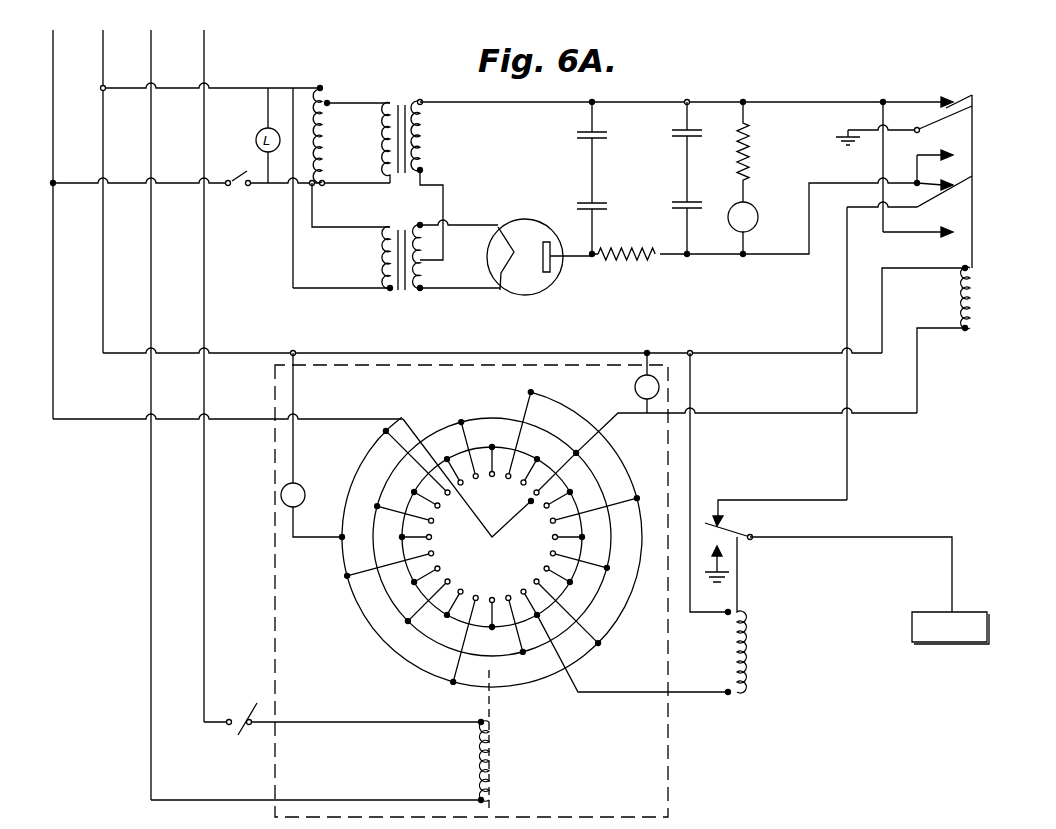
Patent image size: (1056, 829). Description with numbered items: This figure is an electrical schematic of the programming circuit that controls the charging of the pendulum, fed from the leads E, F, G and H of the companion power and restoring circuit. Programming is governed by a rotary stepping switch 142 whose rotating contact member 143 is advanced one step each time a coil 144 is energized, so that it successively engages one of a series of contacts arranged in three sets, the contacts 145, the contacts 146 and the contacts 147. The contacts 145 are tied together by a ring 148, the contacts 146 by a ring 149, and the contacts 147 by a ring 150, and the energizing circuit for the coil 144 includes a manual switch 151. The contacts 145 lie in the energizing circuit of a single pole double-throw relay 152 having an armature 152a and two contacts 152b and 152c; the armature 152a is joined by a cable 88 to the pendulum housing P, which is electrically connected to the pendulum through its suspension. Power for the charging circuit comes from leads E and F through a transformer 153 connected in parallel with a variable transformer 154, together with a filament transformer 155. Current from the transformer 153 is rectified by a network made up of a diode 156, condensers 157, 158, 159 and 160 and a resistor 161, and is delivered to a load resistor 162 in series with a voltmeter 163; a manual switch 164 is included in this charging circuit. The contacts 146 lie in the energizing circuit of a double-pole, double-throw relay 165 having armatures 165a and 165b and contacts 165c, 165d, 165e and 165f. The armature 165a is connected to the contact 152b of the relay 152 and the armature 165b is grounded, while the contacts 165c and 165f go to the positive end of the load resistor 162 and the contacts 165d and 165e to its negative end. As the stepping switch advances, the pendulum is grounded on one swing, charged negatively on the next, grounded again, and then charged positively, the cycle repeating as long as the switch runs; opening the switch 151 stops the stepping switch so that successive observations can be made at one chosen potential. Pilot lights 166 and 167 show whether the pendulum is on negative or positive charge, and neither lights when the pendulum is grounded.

The cable 88 is at (905, 537).
The rotary stepping switch 142 is at (668, 763).
The rotating contact member 143 is at (520, 513).
The coil 144 is at (498, 772).
The contacts 145 is at (500, 578).
The contacts 146 is at (432, 538).
The contacts 147 is at (533, 563).
The ring 148 is at (600, 490).
The ring 149 is at (600, 616).
The ring 150 is at (590, 651).
The manual switch 151 is at (342, 732).
The single pole double-throw relay 152 is at (749, 662).
The armature 152a is at (738, 530).
The contact 152b is at (722, 516).
The contact 152c is at (728, 549).
The transformer 153 is at (402, 101).
The variable transformer 154 is at (330, 101).
The filament transformer 155 is at (401, 291).
The diode 156 is at (535, 291).
The condenser 157 is at (578, 204).
The condenser 158 is at (578, 133).
The condenser 159 is at (673, 134).
The condenser 160 is at (673, 207).
The resistor 161 is at (638, 262).
The load resistor 162 is at (751, 152).
The voltmeter 163 is at (759, 216).
The manual switch 164 is at (238, 186).
The double-pole double-throw relay 165 is at (976, 303).
The armature 165a is at (940, 205).
The armature 165b is at (955, 122).
The contact 165c is at (955, 232).
The contact 165d is at (953, 184).
The contact 165e is at (953, 153).
The contact 165f is at (947, 100).
The pilot light 166 is at (283, 505).
The pilot light 167 is at (657, 372).